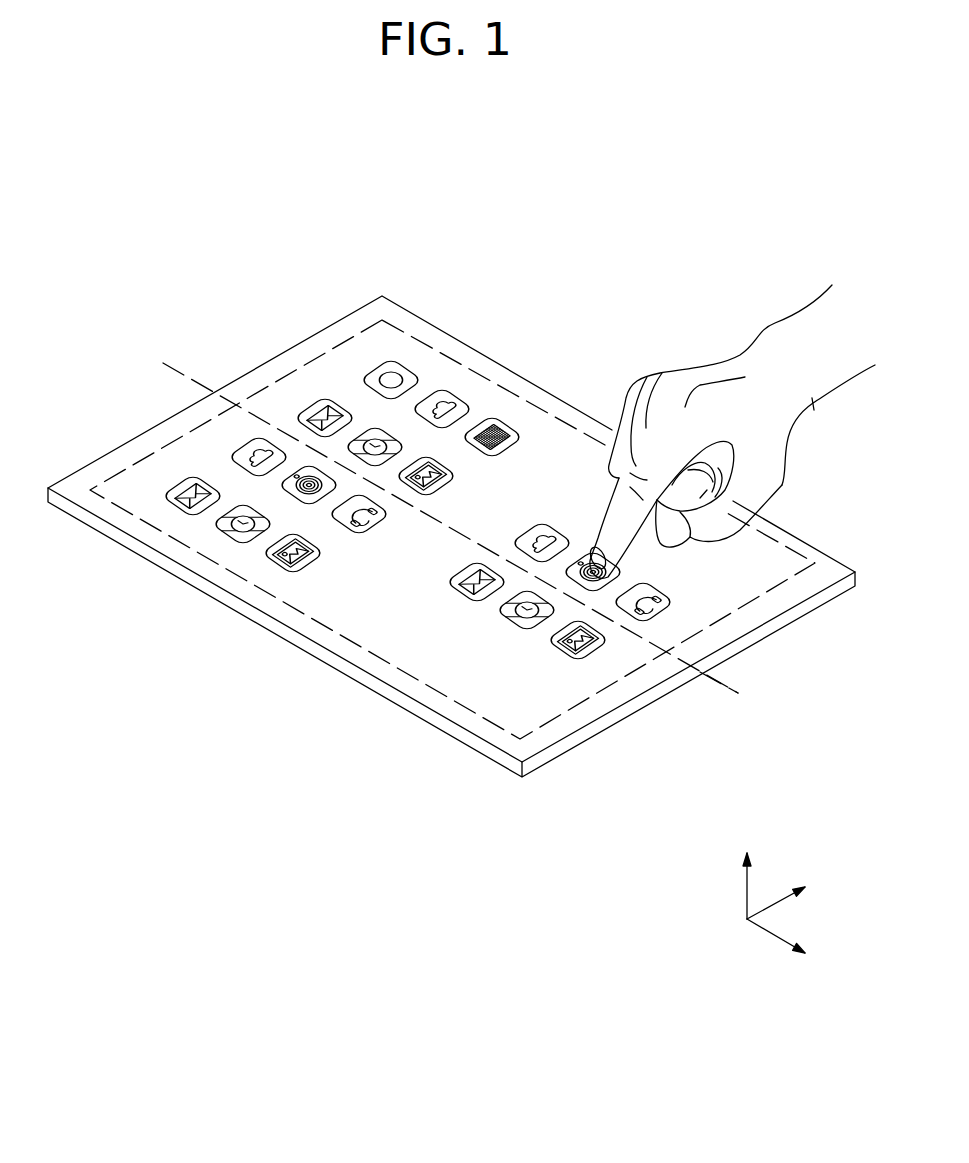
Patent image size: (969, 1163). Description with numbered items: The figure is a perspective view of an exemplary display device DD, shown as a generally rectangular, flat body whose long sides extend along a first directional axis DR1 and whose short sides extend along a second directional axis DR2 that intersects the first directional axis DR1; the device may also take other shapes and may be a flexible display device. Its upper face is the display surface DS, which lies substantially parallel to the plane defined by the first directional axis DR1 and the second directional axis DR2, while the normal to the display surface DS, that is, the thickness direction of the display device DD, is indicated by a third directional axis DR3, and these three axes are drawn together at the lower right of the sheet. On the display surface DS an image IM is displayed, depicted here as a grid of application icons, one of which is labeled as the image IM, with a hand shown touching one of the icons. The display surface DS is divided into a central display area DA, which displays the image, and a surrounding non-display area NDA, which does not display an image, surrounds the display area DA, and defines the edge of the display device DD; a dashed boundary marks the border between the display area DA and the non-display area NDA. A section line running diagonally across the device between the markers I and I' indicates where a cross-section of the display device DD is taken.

The display device DD is at (507, 262).
The display surface DS is at (547, 308).
The non-display area NDA is at (541, 398).
The display area DA is at (559, 460).
The image IM is at (307, 405).
The section line start I is at (430, 528).
The section line end I' is at (714, 702).
The first directional axis DR1 is at (798, 946).
The second directional axis DR2 is at (797, 893).
The third directional axis DR3 is at (746, 873).